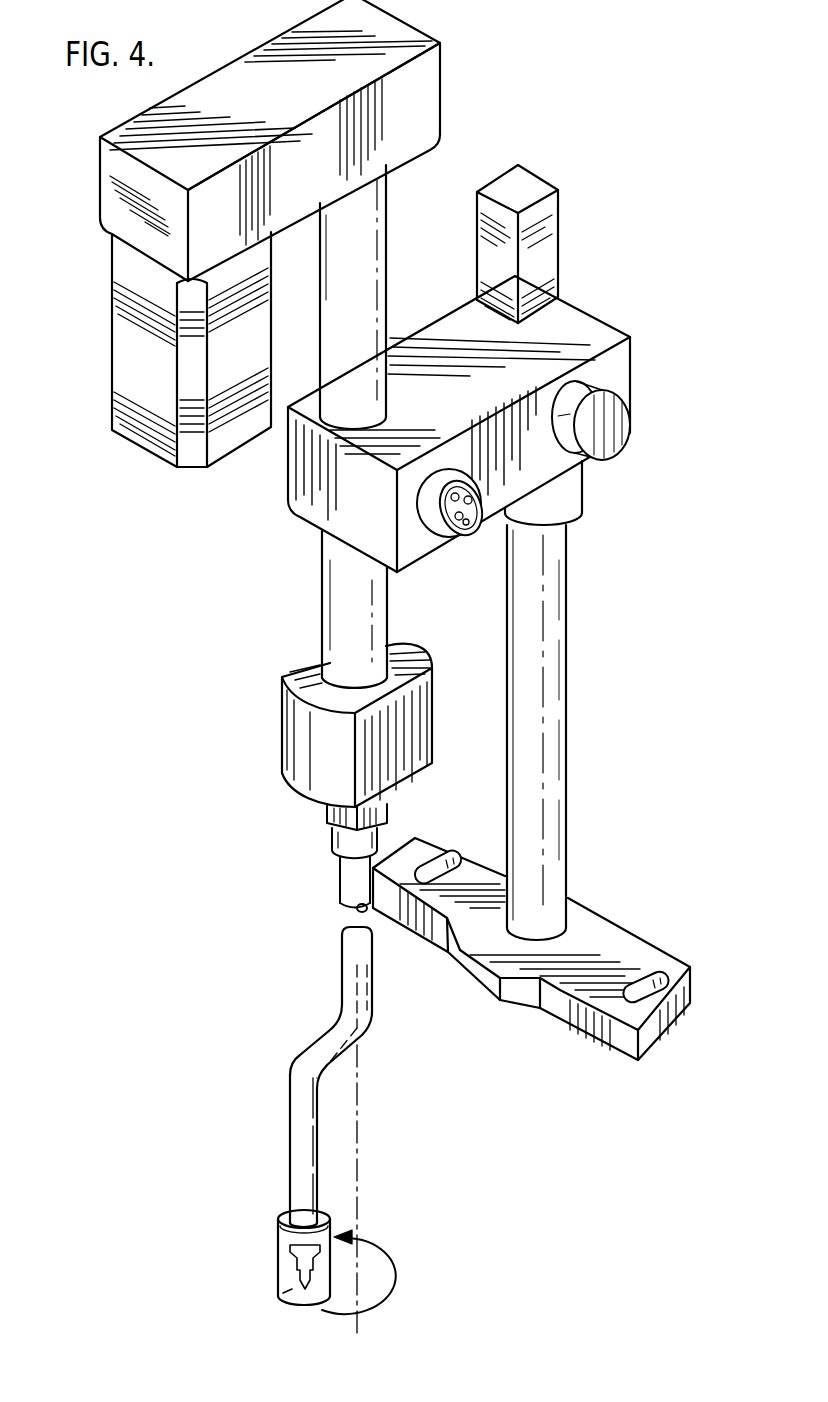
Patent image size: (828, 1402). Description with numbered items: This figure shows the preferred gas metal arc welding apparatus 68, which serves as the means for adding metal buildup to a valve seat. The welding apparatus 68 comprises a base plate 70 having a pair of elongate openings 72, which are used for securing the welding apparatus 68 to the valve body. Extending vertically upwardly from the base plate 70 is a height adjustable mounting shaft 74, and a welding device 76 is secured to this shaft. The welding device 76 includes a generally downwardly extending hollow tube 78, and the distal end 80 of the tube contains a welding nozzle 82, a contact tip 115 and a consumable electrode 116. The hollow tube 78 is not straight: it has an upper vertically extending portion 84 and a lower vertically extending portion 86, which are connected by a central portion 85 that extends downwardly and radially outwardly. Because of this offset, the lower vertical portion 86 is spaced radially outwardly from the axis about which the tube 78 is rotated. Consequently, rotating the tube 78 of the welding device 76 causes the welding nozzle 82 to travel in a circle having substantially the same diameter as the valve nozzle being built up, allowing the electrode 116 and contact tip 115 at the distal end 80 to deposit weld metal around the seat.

The welding apparatus 68 is at (554, 165).
The base plate 70 is at (622, 930).
The elongate openings 72 is at (447, 862).
The height adjustable mounting shaft 74 is at (558, 636).
The welding device 76 is at (112, 400).
The hollow tube 78 is at (342, 946).
The distal end 80 is at (278, 1258).
The welding nozzle 82 is at (277, 1273).
The upper vertically extending portion 84 is at (373, 984).
The central portion 85 is at (310, 1042).
The lower vertically extending portion 86 is at (287, 1135).
The contact tip 115 is at (332, 1257).
The consumable electrode 116 is at (283, 1293).